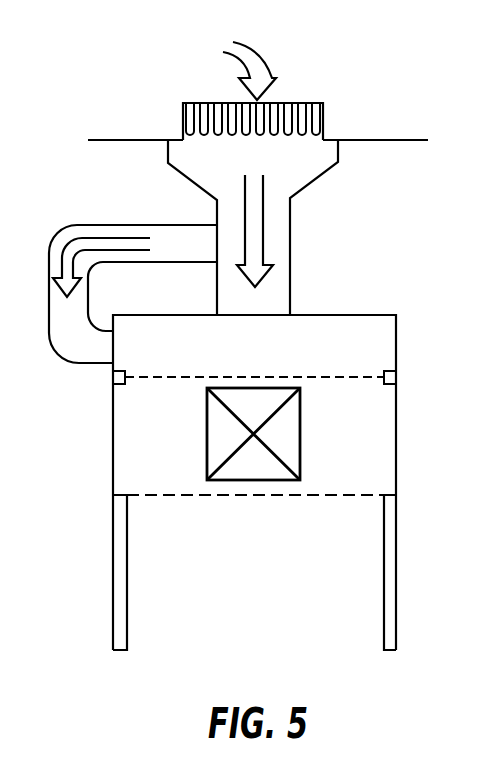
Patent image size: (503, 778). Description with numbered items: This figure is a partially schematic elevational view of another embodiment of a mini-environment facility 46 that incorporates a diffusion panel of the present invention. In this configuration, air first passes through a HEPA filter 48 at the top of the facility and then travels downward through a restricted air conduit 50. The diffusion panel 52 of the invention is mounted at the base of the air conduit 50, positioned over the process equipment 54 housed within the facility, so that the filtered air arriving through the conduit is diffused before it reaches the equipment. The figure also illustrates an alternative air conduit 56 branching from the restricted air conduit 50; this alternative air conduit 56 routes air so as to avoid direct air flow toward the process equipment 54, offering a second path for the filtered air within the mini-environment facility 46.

The mini-environment facility 46 is at (417, 368).
The HEPA filter 48 is at (317, 118).
The restricted air conduit 50 is at (290, 256).
The diffusion panel 52 is at (208, 375).
The process equipment 54 is at (300, 452).
The alternative air conduit 56 is at (103, 225).